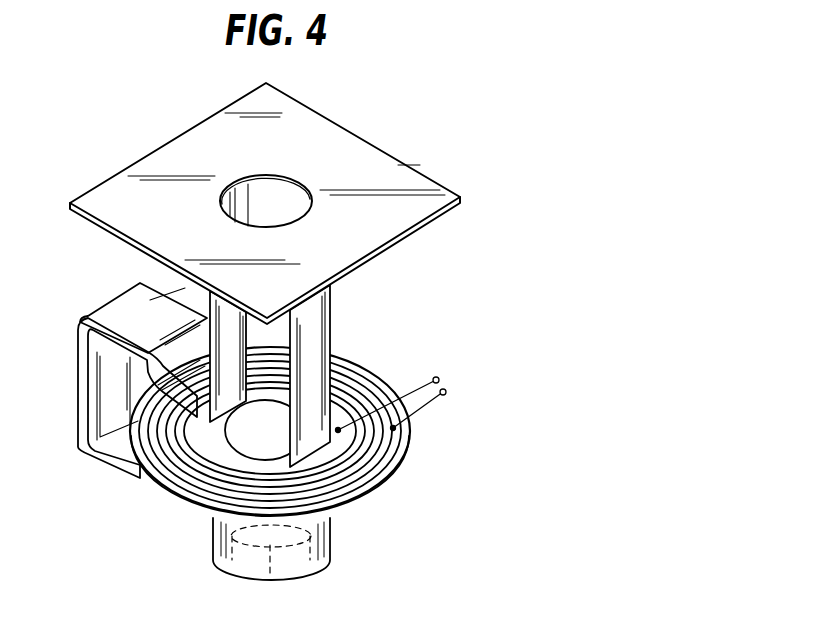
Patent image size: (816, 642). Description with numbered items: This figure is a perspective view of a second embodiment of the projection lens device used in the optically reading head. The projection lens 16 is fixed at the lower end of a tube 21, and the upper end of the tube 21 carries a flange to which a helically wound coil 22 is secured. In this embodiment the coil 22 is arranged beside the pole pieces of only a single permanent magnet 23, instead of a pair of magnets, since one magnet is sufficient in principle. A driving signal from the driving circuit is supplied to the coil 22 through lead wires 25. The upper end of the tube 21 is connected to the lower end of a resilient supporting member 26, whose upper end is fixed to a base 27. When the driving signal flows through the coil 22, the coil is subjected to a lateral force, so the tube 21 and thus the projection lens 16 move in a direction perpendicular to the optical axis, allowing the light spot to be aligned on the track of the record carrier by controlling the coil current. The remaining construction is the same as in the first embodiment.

The projection lens 16 is at (247, 553).
The tube 21 is at (333, 532).
The helically wound coil 22 is at (170, 470).
The permanent magnet 23 is at (84, 392).
The lead wires 25 is at (448, 389).
The resilient supporting member 26 is at (237, 352).
The base 27 is at (384, 166).